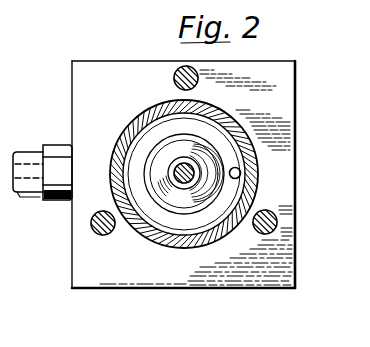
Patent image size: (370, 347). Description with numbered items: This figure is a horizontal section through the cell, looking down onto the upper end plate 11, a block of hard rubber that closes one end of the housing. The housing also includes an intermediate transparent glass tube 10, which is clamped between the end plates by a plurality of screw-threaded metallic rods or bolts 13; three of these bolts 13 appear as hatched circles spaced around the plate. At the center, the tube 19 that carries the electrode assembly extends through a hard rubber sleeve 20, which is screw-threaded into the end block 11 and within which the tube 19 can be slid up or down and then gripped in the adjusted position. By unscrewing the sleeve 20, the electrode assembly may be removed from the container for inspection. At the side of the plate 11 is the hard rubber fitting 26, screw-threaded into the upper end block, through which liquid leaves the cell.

The transparent glass tube 10 is at (241, 173).
The end plate 11 is at (272, 90).
The bolts 13 is at (279, 222).
The tube 19 is at (188, 186).
The sleeve 20 is at (163, 157).
The fitting 26 is at (50, 202).